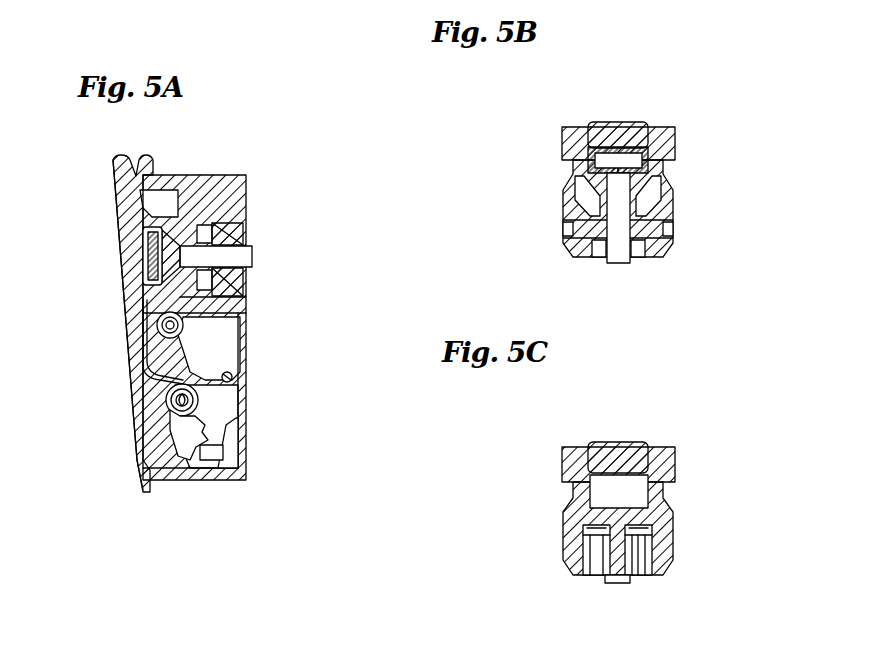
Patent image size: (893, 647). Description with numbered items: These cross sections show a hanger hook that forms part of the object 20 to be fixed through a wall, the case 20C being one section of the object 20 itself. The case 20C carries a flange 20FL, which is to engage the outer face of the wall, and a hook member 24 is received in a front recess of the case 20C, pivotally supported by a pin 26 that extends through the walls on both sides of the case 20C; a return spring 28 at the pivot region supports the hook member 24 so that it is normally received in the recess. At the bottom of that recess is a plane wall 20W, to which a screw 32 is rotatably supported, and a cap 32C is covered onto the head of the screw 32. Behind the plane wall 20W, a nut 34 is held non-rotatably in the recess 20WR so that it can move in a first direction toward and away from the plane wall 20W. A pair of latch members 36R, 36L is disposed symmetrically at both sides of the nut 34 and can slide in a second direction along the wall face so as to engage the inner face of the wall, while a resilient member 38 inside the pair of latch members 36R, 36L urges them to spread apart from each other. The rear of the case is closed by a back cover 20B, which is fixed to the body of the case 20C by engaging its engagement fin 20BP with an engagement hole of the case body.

In FIG. 5A, the object 20 is at (242, 161).
In FIG. 5A, the plane wall 20W is at (138, 292).
In FIG. 5A, the recess 20WR is at (245, 234).
In FIG. 5A, the hook member 24 is at (118, 320).
In FIG. 5A, the pin 26 is at (160, 400).
In FIG. 5A, the return spring 28 is at (180, 462).
In FIG. 5A, the screw 32 is at (238, 257).
In FIG. 5B, the screw 32 is at (622, 200).
In FIG. 5C, the screw 32 is at (615, 583).
In FIG. 5A, the nut 34 is at (240, 279).
In FIG. 5B, the nut 34 is at (673, 228).
In FIG. 5A, the back cover 20B is at (243, 420).
In FIG. 5A, the engagement fin 20BP is at (243, 452).
In FIG. 5B, the cap 32C is at (619, 122).
In FIG. 5C, the cap 32C is at (619, 445).
In FIG. 5B, the flange 20FL is at (675, 148).
In FIG. 5C, the flange 20FL is at (675, 470).
In FIG. 5B, the latch member 36R is at (566, 208).
In FIG. 5C, the latch member 36R is at (566, 545).
In FIG. 5B, the latch member 36L is at (673, 210).
In FIG. 5C, the latch member 36L is at (673, 545).
In FIG. 5C, the case 20C is at (665, 492).
In FIG. 5C, the resilient member 38 is at (640, 575).